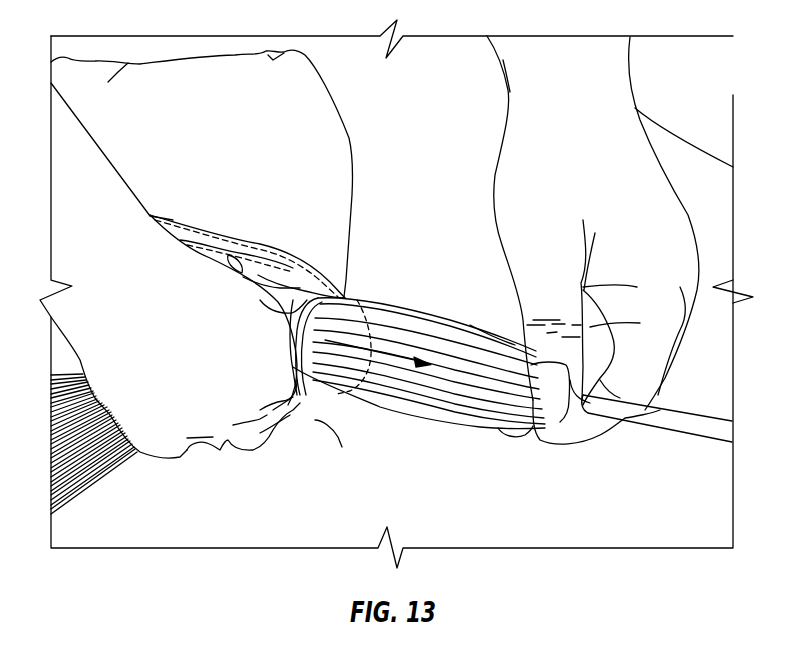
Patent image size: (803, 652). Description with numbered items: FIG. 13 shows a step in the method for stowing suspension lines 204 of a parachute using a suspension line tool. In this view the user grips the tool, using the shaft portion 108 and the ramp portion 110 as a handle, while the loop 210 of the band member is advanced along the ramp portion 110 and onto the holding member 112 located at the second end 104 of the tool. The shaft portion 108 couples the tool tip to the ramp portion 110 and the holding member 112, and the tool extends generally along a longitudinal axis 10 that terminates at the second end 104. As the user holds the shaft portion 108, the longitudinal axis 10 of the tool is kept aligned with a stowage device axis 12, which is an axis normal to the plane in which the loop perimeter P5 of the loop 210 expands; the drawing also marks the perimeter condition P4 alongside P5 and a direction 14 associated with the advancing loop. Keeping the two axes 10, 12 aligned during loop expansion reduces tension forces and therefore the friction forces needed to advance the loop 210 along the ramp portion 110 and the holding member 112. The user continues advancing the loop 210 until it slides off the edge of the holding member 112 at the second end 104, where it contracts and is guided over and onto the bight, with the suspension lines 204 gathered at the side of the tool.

The longitudinal axis 10 is at (419, 384).
The stowage device axis 12 is at (380, 352).
The distal direction / axis 14 is at (325, 337).
The second end 104 is at (288, 353).
The shaft portion 108 is at (682, 437).
The ramp portion 110 is at (473, 334).
The holding member 112 is at (410, 316).
The suspension lines 204 is at (90, 485).
The loop 210 is at (293, 313).
The position P4 is at (348, 298).
The loop perimeter P5 is at (387, 257).